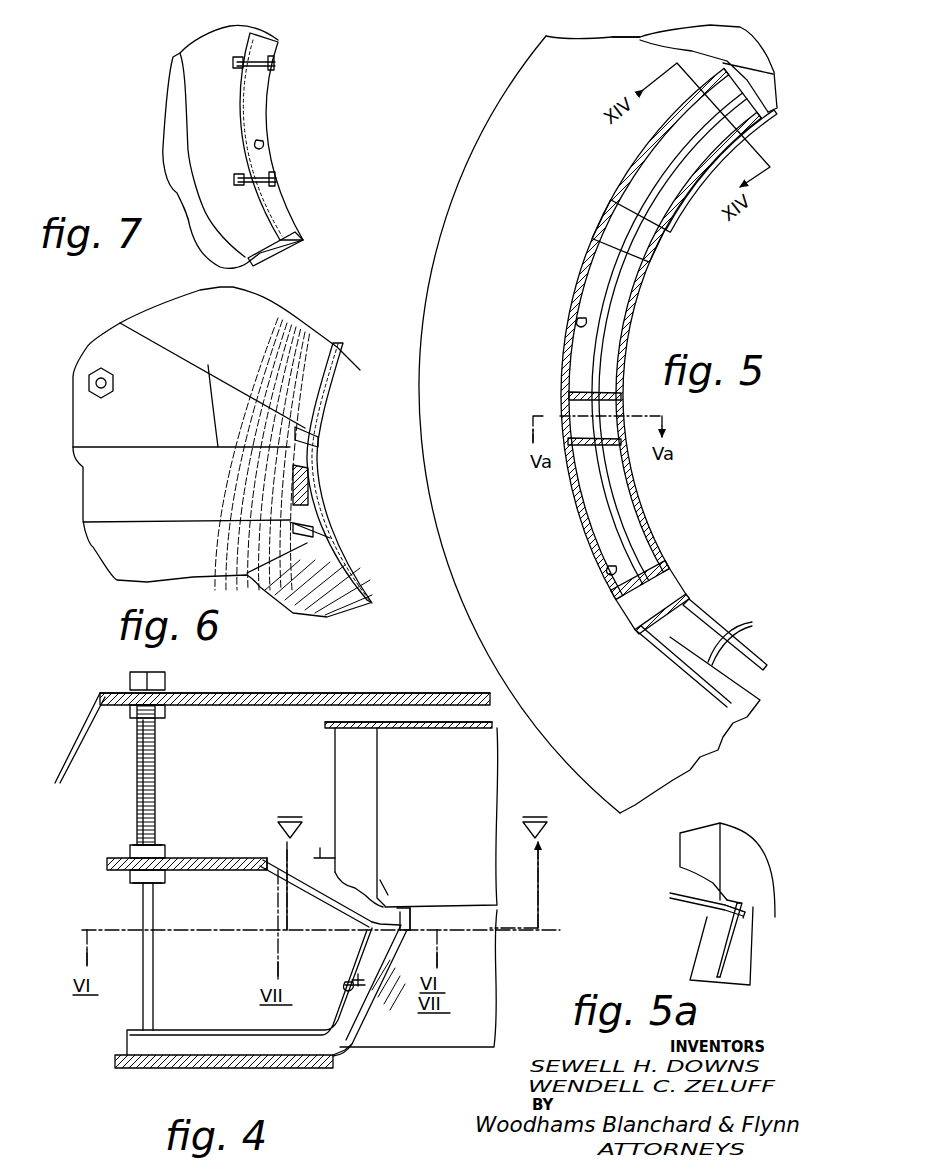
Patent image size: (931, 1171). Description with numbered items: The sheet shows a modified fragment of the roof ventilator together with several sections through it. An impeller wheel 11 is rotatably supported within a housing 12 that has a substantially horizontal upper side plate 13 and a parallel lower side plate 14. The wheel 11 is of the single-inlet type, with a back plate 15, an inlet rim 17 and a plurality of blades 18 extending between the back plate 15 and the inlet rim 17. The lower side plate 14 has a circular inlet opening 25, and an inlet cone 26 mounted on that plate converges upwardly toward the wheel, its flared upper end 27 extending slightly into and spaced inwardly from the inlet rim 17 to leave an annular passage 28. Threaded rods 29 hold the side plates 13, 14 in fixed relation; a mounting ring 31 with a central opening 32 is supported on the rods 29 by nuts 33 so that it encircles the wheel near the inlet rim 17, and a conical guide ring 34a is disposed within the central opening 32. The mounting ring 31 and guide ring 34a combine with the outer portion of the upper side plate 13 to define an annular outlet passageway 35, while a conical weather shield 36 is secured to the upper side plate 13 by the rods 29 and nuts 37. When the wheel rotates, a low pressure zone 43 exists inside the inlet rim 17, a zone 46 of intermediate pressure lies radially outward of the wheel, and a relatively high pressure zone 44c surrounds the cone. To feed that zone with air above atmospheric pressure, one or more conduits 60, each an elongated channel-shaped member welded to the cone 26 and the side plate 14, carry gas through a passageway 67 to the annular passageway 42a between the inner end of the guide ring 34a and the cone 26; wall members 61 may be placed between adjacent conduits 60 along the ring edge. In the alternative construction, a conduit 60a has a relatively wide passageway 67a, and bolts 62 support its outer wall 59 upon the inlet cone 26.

In FIG. 4, the impeller wheel 11 is at (322, 746).
In FIG. 4, the housing 12 is at (230, 691).
In FIG. 4, the upper side plate 13 is at (332, 692).
In FIG. 4, the lower side plate 14 is at (183, 1067).
In FIG. 4, the back plate 15 is at (430, 724).
In FIG. 5, the inlet rim 17 is at (742, 45).
In FIG. 5a, the inlet rim 17 is at (685, 857).
In FIG. 4, the inlet rim 17 is at (358, 880).
In FIG. 4, the blades 18 is at (362, 790).
In FIG. 4, the inlet opening 25 is at (338, 1058).
In FIG. 7, the inlet cone 26 is at (268, 93).
In FIG. 6, the inlet cone 26 is at (340, 380).
In FIG. 5, the inlet cone 26 is at (692, 188).
In FIG. 5a, the inlet cone 26 is at (757, 905).
In FIG. 4, the inlet cone 26 is at (360, 1007).
In FIG. 4, the upper end of the inlet cone 27 is at (406, 909).
In FIG. 5a, the annular passage 28 is at (728, 873).
In FIG. 4, the annular passage 28 is at (394, 903).
In FIG. 4, the threaded rods 29 is at (155, 990).
In FIG. 4, the mounting ring 31 is at (200, 835).
In FIG. 4, the central opening 32 is at (264, 856).
In FIG. 4, the nuts 33 is at (130, 876).
In FIG. 6, the guide ring 34a is at (318, 440).
In FIG. 5, the guide ring 34a is at (589, 424).
In FIG. 5a, the guide ring 34a is at (680, 905).
In FIG. 4, the guide ring 34a is at (271, 880).
In FIG. 4, the outlet passageway 35 is at (123, 793).
In FIG. 4, the weather shield 36 is at (88, 718).
In FIG. 4, the nuts 37 is at (165, 680).
In FIG. 6, the annular passageway 42a is at (293, 533).
In FIG. 5a, the annular passageway 42a is at (710, 912).
In FIG. 4, the annular passageway 42a is at (377, 918).
In FIG. 4, the low pressure zone 43 is at (387, 876).
In FIG. 4, the high pressure zone 44c is at (364, 966).
In FIG. 4, the intermediate pressure zone 46 is at (317, 846).
In FIG. 7, the outer wall 59 is at (238, 108).
In FIG. 6, the conduit 60 is at (337, 362).
In FIG. 5, the conduit 60 is at (566, 292).
In FIG. 5a, the conduit 60 is at (692, 960).
In FIG. 4, the conduit 60 is at (334, 1024).
In FIG. 7, the conduit 60a is at (268, 252).
In FIG. 6, the wall members 61 is at (313, 530).
In FIG. 5, the wall members 61 is at (605, 218).
In FIG. 7, the bolts 62 is at (272, 40).
In FIG. 6, the passageway 67 is at (295, 487).
In FIG. 5, the passageway 67 is at (578, 322).
In FIG. 4, the passageway 67 is at (345, 985).
In FIG. 7, the passageway 67a is at (265, 146).